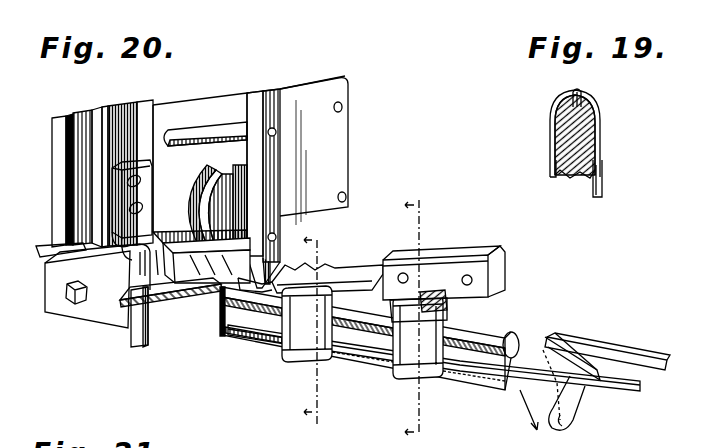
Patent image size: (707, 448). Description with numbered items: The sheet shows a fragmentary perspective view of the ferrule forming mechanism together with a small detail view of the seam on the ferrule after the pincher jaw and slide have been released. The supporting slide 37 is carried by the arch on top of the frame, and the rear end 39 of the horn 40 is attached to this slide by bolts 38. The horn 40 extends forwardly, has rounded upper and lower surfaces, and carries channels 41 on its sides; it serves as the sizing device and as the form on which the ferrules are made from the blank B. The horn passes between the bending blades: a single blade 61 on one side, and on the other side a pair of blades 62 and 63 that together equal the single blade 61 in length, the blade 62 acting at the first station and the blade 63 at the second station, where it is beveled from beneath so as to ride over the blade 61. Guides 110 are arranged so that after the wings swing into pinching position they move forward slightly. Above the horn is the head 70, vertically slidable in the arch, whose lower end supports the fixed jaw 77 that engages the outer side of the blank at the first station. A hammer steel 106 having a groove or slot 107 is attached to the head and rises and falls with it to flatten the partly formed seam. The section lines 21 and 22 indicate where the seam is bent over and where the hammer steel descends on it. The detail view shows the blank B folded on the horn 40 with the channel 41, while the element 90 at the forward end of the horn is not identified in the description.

In FIG. 20, the section line 21 is at (324, 326).
In FIG. 20, the section line 22 is at (426, 316).
In FIG. 20, the supporting slide 37 is at (50, 252).
In FIG. 20, the bolts 38 is at (73, 298).
In FIG. 20, the rear end of horn 39 is at (46, 312).
In FIG. 20, the horn 40 is at (378, 366).
In FIG. 19, the horn 40 is at (580, 142).
In FIG. 20, the channels 41 is at (476, 354).
In FIG. 19, the channels 41 is at (597, 170).
In FIG. 20, the single blade 61 is at (167, 310).
In FIG. 20, the blade 62 is at (262, 283).
In FIG. 20, the blade 63 is at (343, 270).
In FIG. 20, the head 70 is at (346, 80).
In FIG. 20, the fixed jaw 77 is at (266, 272).
In FIG. 20, the lever bar 90 is at (640, 350).
In FIG. 20, the hammer steel 106 is at (428, 298).
In FIG. 20, the groove or slot 107 is at (448, 306).
In FIG. 20, the guides 110 is at (133, 328).
In FIG. 20, the blank B is at (187, 332).
In FIG. 19, the blank B is at (604, 180).